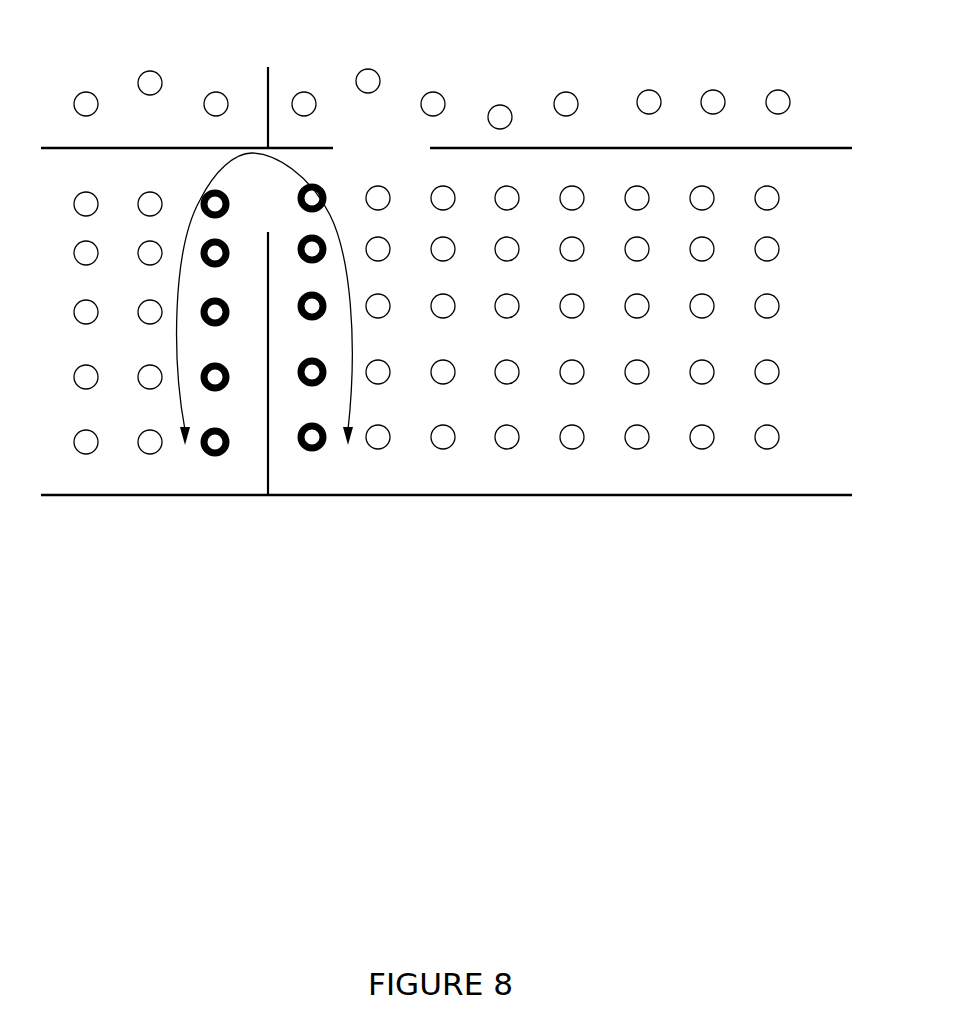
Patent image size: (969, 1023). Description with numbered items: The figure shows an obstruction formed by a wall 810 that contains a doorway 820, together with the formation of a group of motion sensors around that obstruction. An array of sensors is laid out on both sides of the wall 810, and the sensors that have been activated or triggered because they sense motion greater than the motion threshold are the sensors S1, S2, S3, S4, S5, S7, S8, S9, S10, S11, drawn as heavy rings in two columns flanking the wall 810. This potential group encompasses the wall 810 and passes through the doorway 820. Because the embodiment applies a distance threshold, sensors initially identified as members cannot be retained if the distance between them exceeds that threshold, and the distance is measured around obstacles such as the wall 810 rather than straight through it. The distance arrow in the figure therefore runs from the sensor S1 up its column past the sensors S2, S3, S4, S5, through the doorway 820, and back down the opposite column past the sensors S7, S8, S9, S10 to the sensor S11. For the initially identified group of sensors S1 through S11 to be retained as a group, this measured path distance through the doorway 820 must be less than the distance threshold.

The wall 810 is at (268, 482).
The doorway 820 is at (270, 197).
The sensor S1 is at (312, 454).
The sensor S2 is at (312, 390).
The sensor S3 is at (314, 325).
The sensor S4 is at (312, 264).
The sensor S5 is at (312, 213).
The sensor S7 is at (227, 217).
The sensor S8 is at (227, 267).
The sensor S9 is at (226, 329).
The sensor S10 is at (230, 393).
The sensor S11 is at (230, 457).